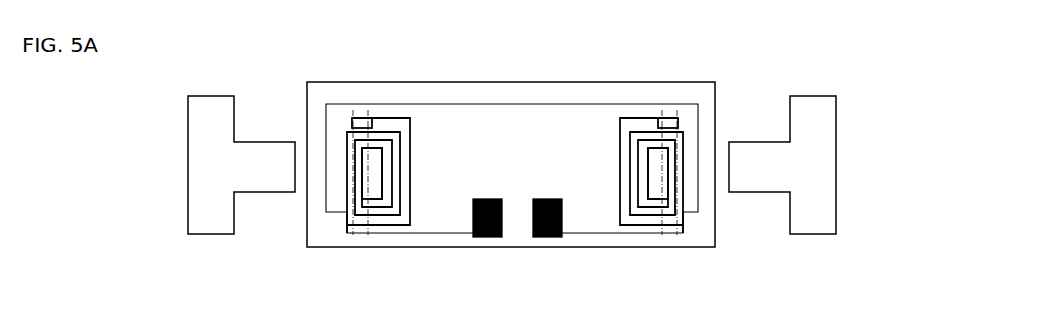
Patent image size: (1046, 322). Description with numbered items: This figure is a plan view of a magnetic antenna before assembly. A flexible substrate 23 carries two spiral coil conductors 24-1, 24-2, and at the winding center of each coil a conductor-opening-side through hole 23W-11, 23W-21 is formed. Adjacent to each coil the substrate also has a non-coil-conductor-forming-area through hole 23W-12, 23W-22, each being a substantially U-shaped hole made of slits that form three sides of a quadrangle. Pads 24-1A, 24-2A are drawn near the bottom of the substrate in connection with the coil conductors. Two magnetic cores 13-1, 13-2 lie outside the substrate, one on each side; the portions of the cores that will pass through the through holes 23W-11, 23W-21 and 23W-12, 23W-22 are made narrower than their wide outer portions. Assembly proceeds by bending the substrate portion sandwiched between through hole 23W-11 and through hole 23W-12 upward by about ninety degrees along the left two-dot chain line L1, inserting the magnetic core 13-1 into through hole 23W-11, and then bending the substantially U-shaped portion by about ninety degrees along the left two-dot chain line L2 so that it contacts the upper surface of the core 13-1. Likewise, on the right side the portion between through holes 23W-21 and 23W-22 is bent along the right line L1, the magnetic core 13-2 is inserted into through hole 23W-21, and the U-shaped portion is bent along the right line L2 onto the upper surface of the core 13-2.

The magnetic core 13-1 is at (200, 164).
The magnetic core 13-2 is at (818, 164).
The flexible substrate 23 is at (512, 92).
The conductor-opening-side through hole 23W-11 is at (367, 150).
The non-coil-conductor-forming-area through hole 23W-12 is at (406, 169).
The conductor-opening-side through hole 23W-21 is at (663, 150).
The non-coil-conductor-forming-area through hole 23W-22 is at (624, 169).
The spiral coil conductor 24-1 is at (340, 131).
The spiral coil conductor 24-2 is at (690, 131).
The first connection pad 24-1A is at (483, 237).
The second connection pad 24-2A is at (548, 237).
The two-dot chain line L1 is at (360, 239).
The two-dot chain line L2 is at (372, 103).